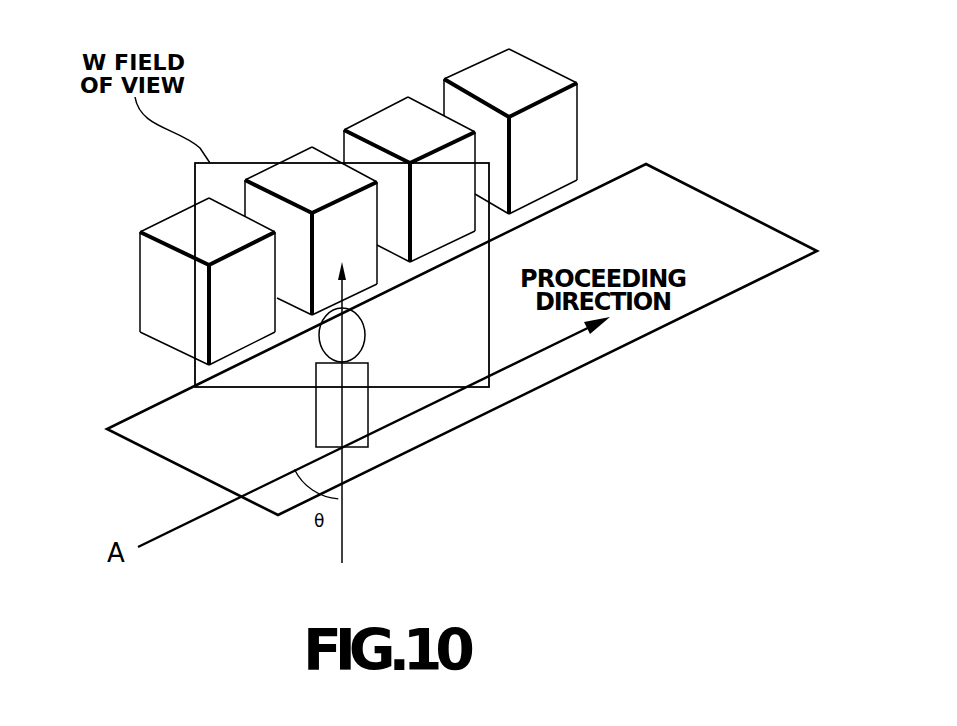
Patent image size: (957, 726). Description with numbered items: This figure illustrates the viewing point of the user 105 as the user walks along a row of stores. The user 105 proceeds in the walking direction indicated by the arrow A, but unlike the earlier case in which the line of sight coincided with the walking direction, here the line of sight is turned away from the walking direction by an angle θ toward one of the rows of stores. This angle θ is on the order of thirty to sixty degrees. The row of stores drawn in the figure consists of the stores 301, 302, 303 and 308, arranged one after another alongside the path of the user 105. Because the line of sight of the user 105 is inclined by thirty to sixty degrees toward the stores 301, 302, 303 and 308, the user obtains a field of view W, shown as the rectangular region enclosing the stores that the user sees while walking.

The user 105 is at (358, 408).
The store 301 is at (155, 222).
The store 302 is at (312, 155).
The store 303 is at (388, 118).
The store 308 is at (492, 77).